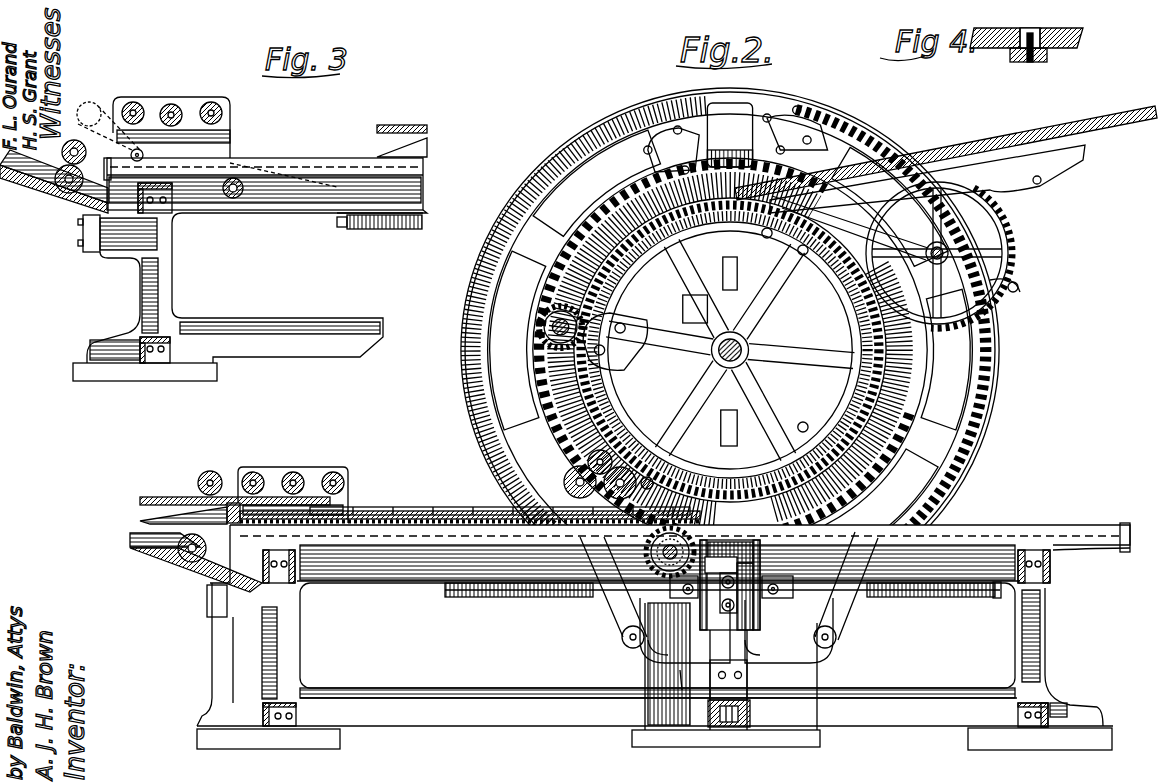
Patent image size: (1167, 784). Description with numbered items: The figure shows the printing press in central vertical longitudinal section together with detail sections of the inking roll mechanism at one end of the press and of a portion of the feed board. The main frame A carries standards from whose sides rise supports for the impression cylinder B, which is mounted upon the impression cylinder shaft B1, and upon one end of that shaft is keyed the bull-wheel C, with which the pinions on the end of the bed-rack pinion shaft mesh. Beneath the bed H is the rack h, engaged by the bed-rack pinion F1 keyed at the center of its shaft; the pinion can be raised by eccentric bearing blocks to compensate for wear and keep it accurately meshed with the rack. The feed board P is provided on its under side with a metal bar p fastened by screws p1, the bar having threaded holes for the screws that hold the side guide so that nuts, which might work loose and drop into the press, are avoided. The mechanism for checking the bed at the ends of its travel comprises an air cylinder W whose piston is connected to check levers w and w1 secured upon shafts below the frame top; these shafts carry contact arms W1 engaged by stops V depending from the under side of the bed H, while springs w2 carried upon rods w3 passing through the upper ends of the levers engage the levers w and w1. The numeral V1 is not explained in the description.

In FIG. 2, the bull-wheel C is at (730, 350).
In FIG. 2, the impression cylinder B is at (730, 350).
In FIG. 2, the impression cylinder shaft B1 is at (710, 369).
In FIG. 2, the feed board P is at (898, 160).
In FIG. 4, the metal bar p is at (1045, 55).
In FIG. 4, the screws p1 is at (1023, 62).
In FIG. 2, the bed H is at (428, 540).
In FIG. 2, the rack h is at (512, 532).
In FIG. 2, the stops V is at (427, 547).
In FIG. 2, the guide wedge V1 is at (183, 560).
In FIG. 3, the guide wedge V1 is at (58, 190).
In FIG. 2, the main frame A is at (1018, 648).
In FIG. 3, the main frame A is at (241, 239).
In FIG. 2, the air cylinder W is at (763, 608).
In FIG. 2, the bed-rack pinion F1 is at (650, 558).
In FIG. 2, the springs w2 is at (535, 597).
In FIG. 2, the contact arms W1 is at (880, 597).
In FIG. 2, the rods w3 is at (627, 613).
In FIG. 2, the check lever w is at (813, 643).
In FIG. 2, the check lever w1 is at (690, 690).